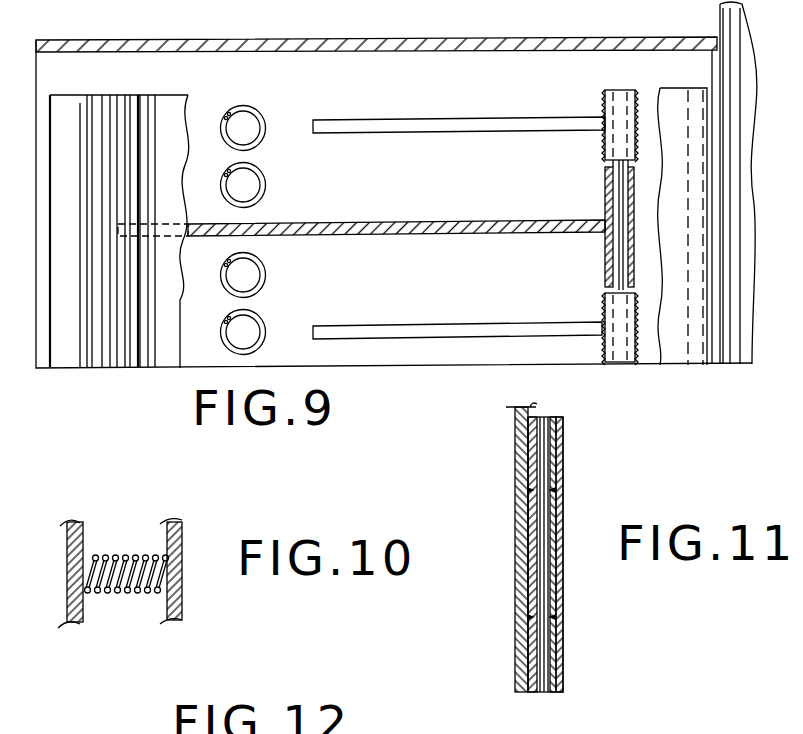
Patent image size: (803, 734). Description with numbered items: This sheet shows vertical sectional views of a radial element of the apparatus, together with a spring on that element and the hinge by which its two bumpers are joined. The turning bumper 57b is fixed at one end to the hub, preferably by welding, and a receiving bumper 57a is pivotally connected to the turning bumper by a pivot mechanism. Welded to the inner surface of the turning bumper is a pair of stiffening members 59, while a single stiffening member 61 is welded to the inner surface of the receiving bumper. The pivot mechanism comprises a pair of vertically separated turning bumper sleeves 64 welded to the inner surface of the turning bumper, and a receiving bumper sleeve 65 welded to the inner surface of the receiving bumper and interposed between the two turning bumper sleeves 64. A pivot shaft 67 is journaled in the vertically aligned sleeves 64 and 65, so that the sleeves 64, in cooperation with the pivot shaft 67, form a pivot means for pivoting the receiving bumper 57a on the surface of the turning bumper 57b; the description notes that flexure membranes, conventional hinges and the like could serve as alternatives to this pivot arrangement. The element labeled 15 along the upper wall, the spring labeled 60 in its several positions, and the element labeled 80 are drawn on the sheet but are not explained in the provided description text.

In FIG. 9, the housing top wall 15 is at (330, 37).
In FIG. 9, the stiffening members 59 is at (434, 119).
In FIG. 9, the compression spring 60 is at (248, 107).
In FIG. 10, the compression spring 60 is at (102, 556).
In FIG. 9, the stiffening member 61 is at (439, 222).
In FIG. 9, the turning bumper sleeves 64 is at (633, 90).
In FIG. 11, the turning bumper sleeves 64 is at (554, 417).
In FIG. 9, the receiving bumper sleeve 65 is at (607, 190).
In FIG. 11, the receiving bumper sleeve 65 is at (560, 500).
In FIG. 9, the pivot shaft 67 is at (623, 173).
In FIG. 11, the pivot shaft 67 is at (541, 692).
In FIG. 11, the receiving bumper 57a is at (563, 567).
In FIG. 11, the turning bumper 57b is at (515, 438).
In FIG. 11, the element 80 is at (585, 728).